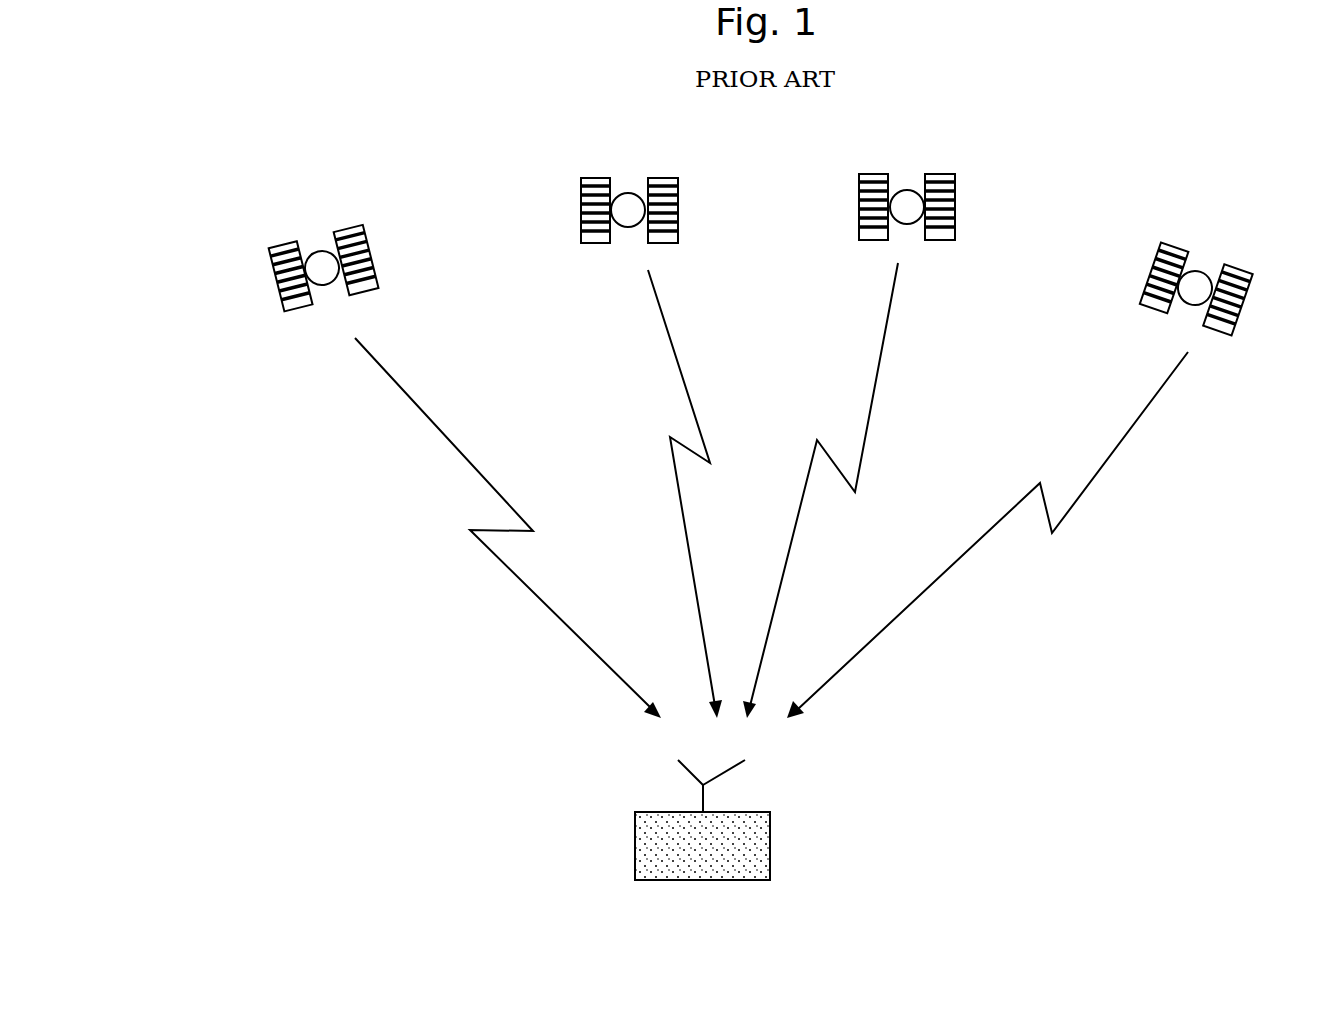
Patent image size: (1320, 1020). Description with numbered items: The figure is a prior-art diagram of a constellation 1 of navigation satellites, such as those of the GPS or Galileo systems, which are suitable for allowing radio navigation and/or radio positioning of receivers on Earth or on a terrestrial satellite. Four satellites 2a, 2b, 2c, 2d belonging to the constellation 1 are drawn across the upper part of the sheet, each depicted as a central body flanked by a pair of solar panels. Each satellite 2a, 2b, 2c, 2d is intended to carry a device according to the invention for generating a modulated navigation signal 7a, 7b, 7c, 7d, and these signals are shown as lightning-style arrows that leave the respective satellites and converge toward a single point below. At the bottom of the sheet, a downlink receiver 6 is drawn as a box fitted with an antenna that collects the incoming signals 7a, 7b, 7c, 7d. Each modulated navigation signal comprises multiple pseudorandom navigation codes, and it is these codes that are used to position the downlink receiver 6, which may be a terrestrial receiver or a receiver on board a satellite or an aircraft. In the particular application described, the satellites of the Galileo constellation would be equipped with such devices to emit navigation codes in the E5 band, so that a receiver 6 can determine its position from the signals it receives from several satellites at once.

The constellation 1 is at (185, 373).
The satellite 2a is at (318, 265).
The satellite 2b is at (631, 206).
The satellite 2c is at (906, 206).
The satellite 2d is at (1205, 284).
The modulated navigation signal 7a is at (455, 443).
The modulated navigation signal 7b is at (671, 340).
The modulated navigation signal 7c is at (878, 372).
The modulated navigation signal 7d is at (1083, 502).
The receiver 6 is at (670, 846).